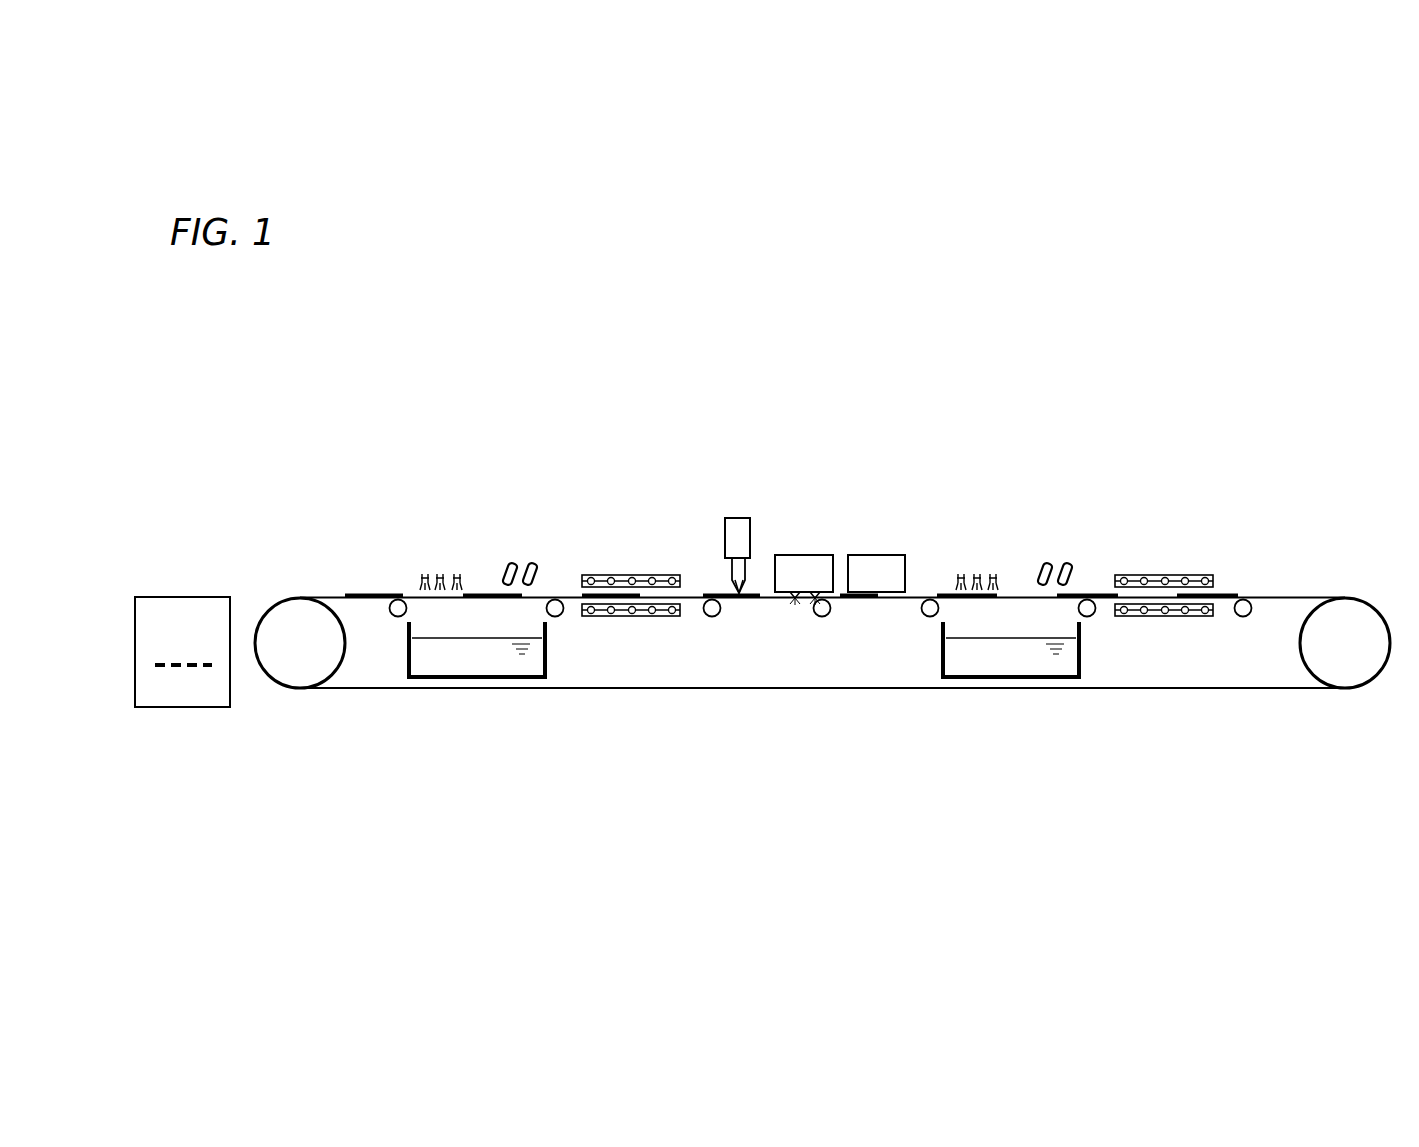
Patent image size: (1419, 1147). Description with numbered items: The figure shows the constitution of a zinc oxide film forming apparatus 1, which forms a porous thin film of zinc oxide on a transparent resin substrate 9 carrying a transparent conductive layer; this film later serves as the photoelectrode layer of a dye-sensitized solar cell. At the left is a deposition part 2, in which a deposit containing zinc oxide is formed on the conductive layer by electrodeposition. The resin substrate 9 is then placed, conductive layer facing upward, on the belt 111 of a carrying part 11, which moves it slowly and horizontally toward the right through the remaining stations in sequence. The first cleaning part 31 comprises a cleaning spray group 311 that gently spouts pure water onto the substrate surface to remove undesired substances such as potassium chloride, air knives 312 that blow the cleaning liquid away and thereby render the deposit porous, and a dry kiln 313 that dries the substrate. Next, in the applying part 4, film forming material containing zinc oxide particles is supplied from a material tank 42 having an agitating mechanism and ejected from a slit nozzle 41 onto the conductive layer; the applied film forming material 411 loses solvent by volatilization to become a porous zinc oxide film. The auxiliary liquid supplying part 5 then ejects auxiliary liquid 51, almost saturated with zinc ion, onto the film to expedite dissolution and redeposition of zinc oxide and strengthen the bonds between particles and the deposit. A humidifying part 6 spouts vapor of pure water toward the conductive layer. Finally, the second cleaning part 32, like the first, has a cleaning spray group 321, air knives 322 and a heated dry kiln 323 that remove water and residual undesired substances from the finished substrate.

The zinc oxide film forming apparatus 1 is at (338, 372).
The deposition part 2 is at (163, 597).
The resin substrate 9 is at (185, 665).
The carrying part 11 is at (378, 712).
The belt 111 is at (327, 597).
The first cleaning part 31 is at (535, 537).
The cleaning spray group 311 is at (438, 556).
The air knives 312 is at (522, 552).
The dry kiln 313 is at (607, 575).
The applying part 4 is at (753, 496).
The slit nozzle 41 is at (741, 575).
The film forming material 411 is at (750, 589).
The material tank 42 is at (728, 536).
The auxiliary liquid supplying part 5 is at (799, 602).
The auxiliary liquid 51 is at (795, 598).
The humidifying part 6 is at (877, 555).
The second cleaning part 32 is at (1070, 537).
The cleaning spray group 321 is at (975, 556).
The air knives 322 is at (1060, 552).
The dry kiln 323 is at (1158, 575).